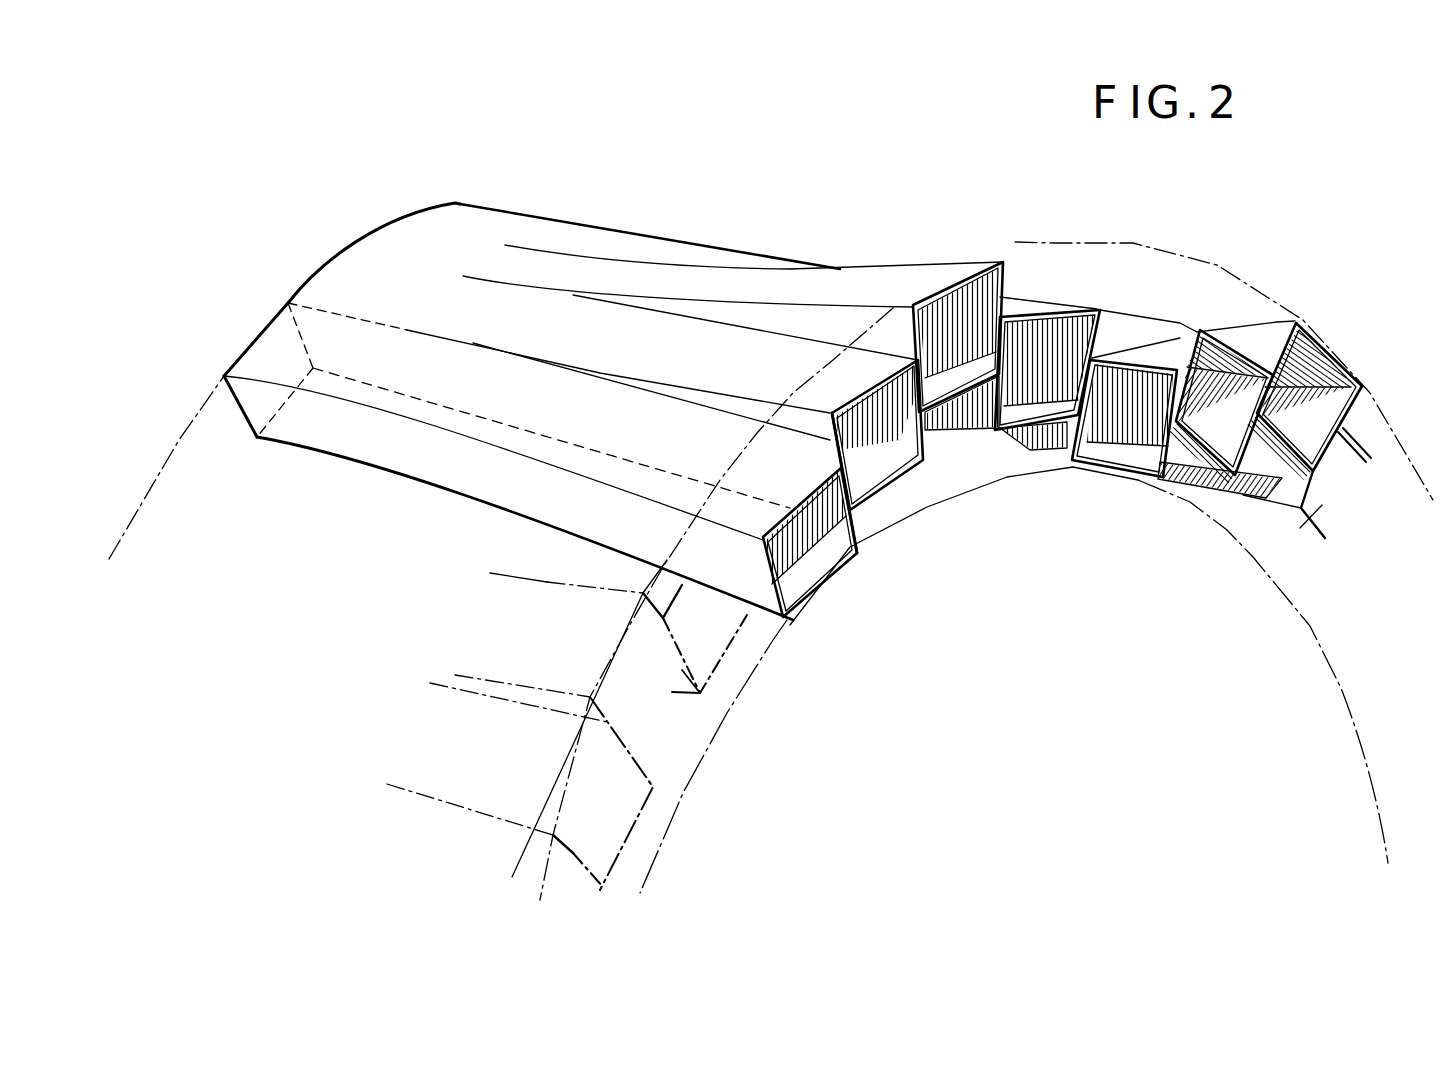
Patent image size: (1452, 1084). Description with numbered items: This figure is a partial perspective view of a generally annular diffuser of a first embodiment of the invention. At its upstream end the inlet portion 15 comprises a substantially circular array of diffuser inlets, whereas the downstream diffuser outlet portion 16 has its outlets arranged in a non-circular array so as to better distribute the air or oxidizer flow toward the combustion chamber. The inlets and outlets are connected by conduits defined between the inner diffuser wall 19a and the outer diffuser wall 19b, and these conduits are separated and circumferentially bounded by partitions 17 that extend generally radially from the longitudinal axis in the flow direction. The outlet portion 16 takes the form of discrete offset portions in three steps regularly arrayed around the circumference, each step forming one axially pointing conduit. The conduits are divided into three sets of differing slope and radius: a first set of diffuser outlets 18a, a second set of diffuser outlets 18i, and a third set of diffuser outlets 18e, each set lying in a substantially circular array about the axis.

The inlet portion 15 is at (348, 265).
The diffuser outlet portion 16 is at (729, 228).
The partitions 17 is at (1003, 343).
The diffuser outlets of the first set 18a is at (893, 443).
The diffuser outlets of the third set 18e is at (962, 300).
The diffuser outlets of the second set 18i is at (815, 560).
The inner diffuser wall 19a is at (1138, 480).
The outer diffuser wall 19b is at (1228, 355).